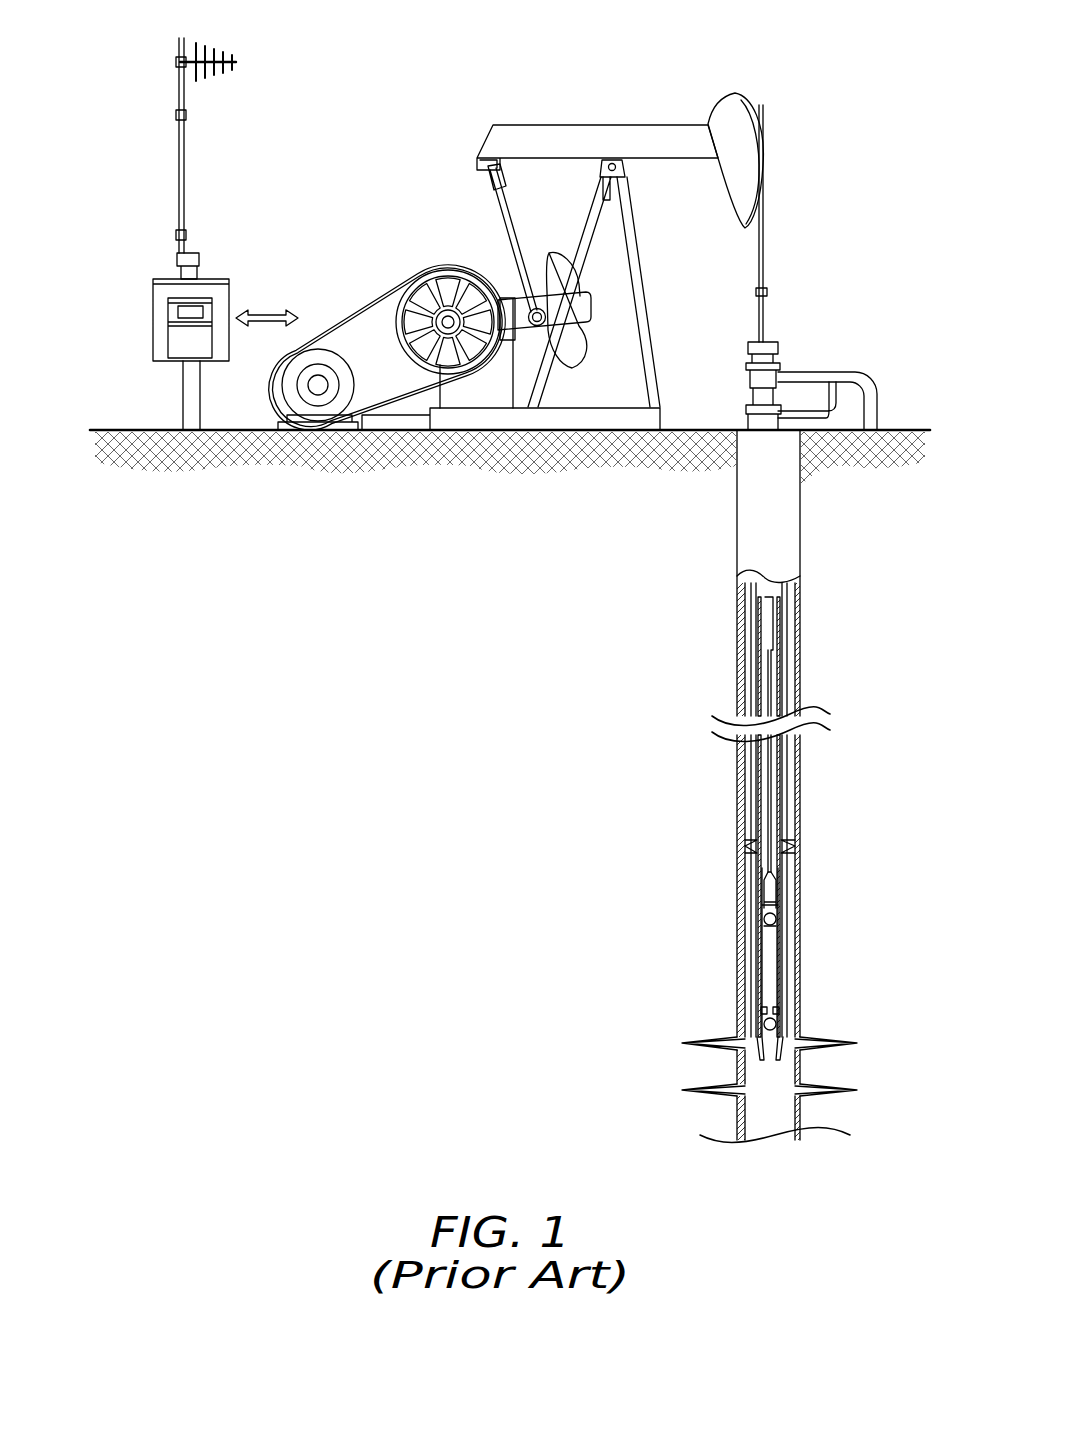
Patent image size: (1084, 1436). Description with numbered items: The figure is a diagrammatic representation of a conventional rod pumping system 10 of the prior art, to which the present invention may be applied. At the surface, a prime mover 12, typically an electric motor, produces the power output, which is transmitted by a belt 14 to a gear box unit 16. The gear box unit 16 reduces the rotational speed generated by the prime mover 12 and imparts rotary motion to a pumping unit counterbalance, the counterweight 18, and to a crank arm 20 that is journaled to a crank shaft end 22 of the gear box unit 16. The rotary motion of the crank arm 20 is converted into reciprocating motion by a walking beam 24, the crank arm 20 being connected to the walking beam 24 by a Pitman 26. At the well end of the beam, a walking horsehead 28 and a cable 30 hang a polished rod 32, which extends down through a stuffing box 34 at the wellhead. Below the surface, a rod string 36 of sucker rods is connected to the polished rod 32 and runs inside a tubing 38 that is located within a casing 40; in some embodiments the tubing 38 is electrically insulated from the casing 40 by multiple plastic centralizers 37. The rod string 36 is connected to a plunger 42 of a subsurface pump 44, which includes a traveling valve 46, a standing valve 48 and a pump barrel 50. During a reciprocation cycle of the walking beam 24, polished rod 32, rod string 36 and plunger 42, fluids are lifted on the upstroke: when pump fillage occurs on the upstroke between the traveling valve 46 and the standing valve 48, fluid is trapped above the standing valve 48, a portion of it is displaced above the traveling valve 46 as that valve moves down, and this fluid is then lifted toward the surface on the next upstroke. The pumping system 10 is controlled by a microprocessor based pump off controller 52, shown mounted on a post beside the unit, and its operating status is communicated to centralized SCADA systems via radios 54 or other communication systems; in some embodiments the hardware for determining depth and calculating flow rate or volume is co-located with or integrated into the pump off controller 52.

The rod pumping system 10 is at (368, 110).
The prime mover 12 is at (294, 350).
The belt 14 is at (378, 305).
The gear box unit 16 is at (454, 238).
The counterweight 18 is at (554, 254).
The crank arm 20 is at (598, 318).
The crank shaft end 22 is at (512, 336).
The walking beam 24 is at (586, 124).
The Pitman 26 is at (497, 210).
The walking horsehead 28 is at (741, 129).
The cable 30 is at (765, 243).
The polished rod 32 is at (766, 311).
The stuffing box 34 is at (790, 344).
The rod string 36 is at (766, 667).
The plastic centralizers 37 is at (783, 812).
The tubing 38 is at (757, 637).
The casing 40 is at (750, 537).
The plunger 42 is at (780, 896).
The subsurface pump 44 is at (719, 900).
The traveling valve 46 is at (776, 919).
The standing valve 48 is at (777, 1026).
The pump barrel 50 is at (784, 986).
The pump off controller 52 is at (168, 315).
The radios 54 is at (210, 48).